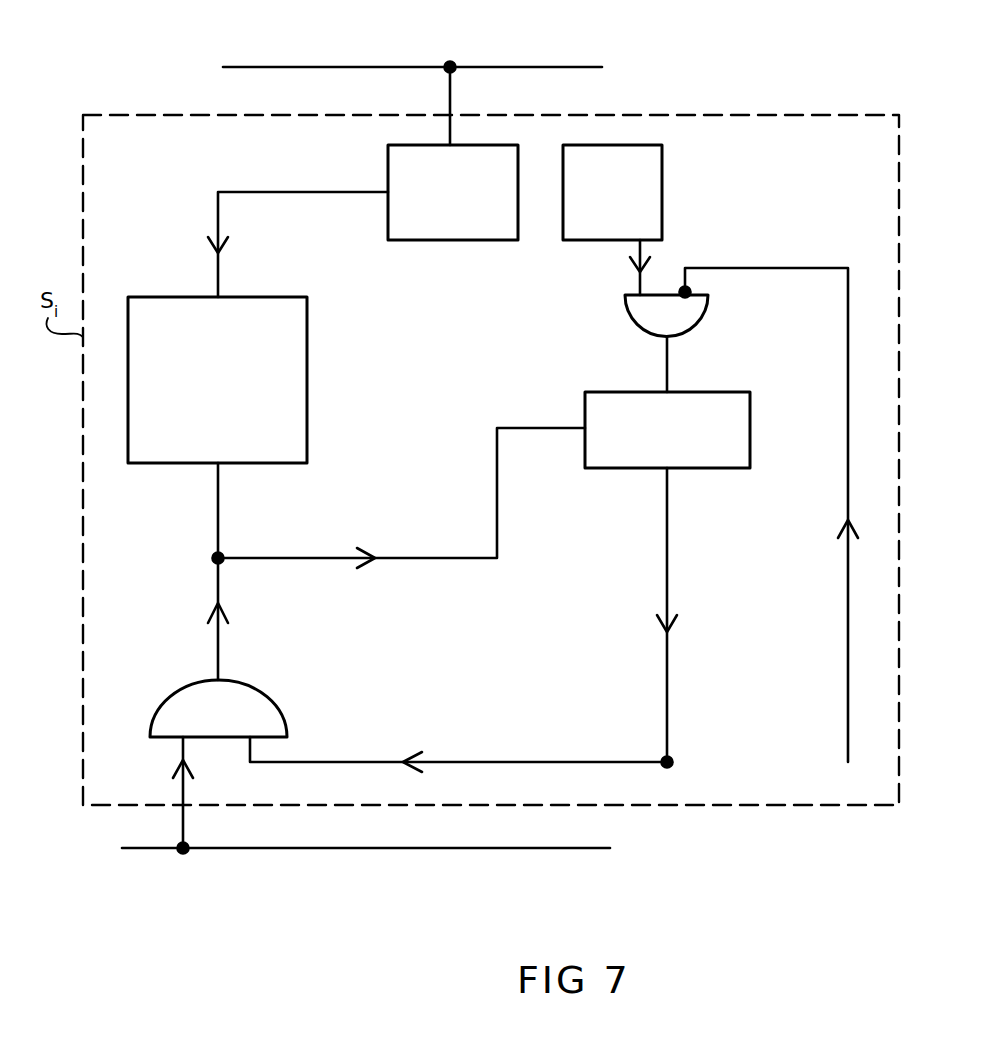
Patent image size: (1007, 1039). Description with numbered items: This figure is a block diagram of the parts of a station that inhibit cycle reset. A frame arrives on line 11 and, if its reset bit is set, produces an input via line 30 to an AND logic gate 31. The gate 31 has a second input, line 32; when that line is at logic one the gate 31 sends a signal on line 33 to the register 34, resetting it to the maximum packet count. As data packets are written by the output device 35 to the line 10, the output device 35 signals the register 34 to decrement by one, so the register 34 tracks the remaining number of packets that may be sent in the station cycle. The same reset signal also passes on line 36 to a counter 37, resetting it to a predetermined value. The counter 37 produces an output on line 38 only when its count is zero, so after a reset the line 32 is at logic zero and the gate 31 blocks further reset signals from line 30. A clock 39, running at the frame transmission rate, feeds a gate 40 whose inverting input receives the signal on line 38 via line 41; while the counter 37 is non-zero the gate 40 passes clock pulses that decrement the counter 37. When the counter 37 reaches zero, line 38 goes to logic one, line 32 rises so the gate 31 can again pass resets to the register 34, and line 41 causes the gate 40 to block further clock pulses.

The line 10 is at (353, 67).
The line 11 is at (350, 850).
The line 30 is at (180, 750).
The AND logic gate 31 is at (178, 695).
The line 32 is at (328, 762).
The line 33 is at (218, 530).
The register 34 is at (307, 373).
The output device 35 is at (467, 240).
The line 36 is at (497, 472).
The counter 37 is at (727, 392).
The line 38 is at (668, 678).
The clock 39 is at (662, 198).
The gate 40 is at (628, 320).
The line 41 is at (848, 432).